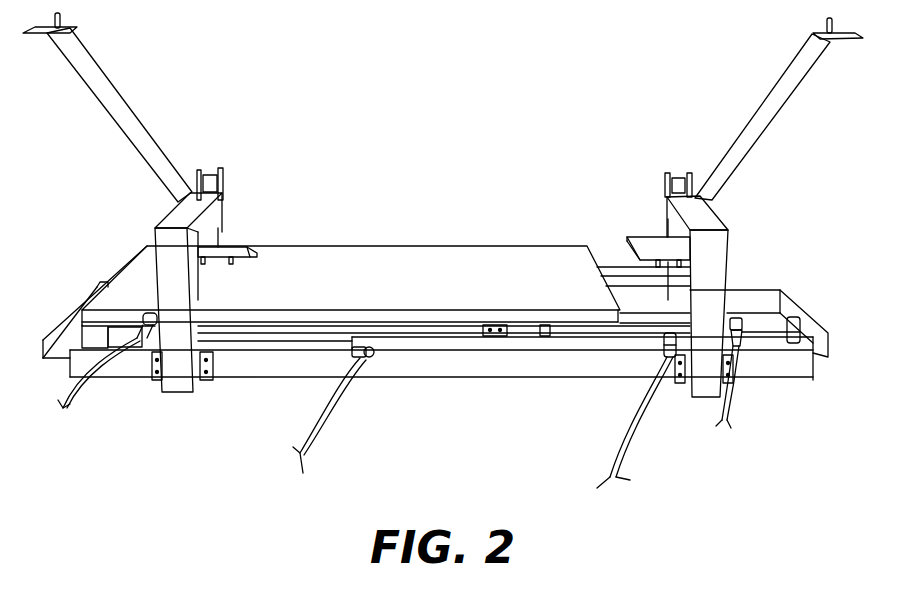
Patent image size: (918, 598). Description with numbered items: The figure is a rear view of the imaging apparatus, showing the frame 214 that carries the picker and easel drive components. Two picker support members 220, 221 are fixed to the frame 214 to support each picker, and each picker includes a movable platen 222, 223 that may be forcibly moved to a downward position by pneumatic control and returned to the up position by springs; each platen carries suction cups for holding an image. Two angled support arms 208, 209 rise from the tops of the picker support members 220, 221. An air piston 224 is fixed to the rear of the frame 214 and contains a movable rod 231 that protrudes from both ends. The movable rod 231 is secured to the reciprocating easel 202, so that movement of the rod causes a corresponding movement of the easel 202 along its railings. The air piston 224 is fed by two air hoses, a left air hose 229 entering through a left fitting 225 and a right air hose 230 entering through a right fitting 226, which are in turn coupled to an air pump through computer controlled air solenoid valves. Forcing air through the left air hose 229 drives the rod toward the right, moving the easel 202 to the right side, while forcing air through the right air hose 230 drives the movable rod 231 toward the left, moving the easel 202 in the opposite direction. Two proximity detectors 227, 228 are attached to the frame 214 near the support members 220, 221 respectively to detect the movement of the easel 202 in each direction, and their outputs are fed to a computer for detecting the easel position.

The reciprocating easel 202 is at (395, 244).
The right support arm 208 is at (778, 78).
The left support arm 209 is at (115, 80).
The frame 214 is at (416, 370).
The picker support member 220 is at (155, 226).
The picker support member 221 is at (725, 222).
The movable platen 222 is at (243, 236).
The movable platen 223 is at (633, 236).
The air piston 224 is at (489, 345).
The left fitting 225 is at (355, 353).
The right fitting 226 is at (667, 357).
The proximity detector 227 is at (737, 350).
The proximity detector 228 is at (142, 330).
The left air hose 229 is at (333, 427).
The right air hose 230 is at (638, 423).
The movable rod 231 is at (233, 345).